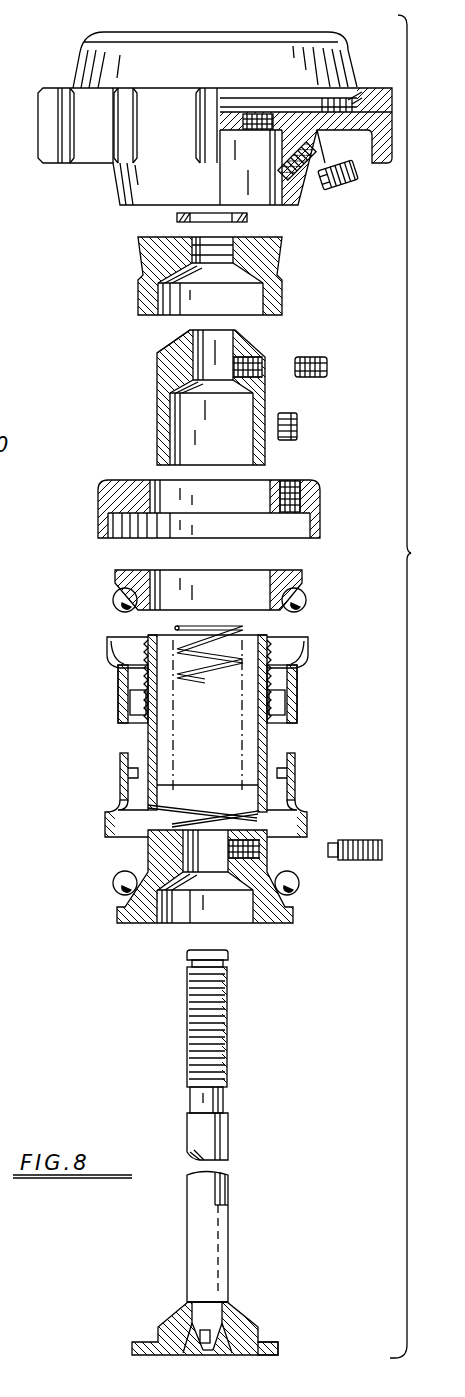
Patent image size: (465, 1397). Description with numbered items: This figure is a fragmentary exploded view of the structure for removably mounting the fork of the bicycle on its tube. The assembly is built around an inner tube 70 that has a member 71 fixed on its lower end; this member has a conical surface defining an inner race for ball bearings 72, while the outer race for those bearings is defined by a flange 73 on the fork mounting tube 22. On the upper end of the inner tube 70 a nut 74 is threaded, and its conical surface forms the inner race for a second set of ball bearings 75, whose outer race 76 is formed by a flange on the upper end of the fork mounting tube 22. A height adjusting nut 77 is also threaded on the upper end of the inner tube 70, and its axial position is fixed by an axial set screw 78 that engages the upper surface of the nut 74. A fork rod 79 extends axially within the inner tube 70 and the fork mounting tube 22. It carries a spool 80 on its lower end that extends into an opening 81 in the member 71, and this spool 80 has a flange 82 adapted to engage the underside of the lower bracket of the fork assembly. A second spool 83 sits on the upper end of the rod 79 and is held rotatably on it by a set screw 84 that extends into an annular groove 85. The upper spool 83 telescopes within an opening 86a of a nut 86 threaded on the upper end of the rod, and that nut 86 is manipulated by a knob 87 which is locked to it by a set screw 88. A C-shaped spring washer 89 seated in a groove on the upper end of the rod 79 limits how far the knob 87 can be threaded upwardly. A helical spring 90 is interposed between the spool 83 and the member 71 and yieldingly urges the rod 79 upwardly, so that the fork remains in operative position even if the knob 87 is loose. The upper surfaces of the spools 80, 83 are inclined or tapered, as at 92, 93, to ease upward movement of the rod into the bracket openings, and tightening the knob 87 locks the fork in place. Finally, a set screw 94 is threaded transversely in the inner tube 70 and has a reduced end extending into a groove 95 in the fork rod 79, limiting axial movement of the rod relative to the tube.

The fork mounting tube 22 is at (297, 698).
The inner tube 70 is at (267, 735).
The member 71 is at (218, 894).
The ball bearings 72 is at (113, 883).
The flange 73 is at (305, 812).
The nut 74 is at (305, 575).
The ball bearings 75 is at (307, 603).
The outer race 76 is at (310, 653).
The height adjusting nut 77 is at (310, 500).
The axial set screw 78 is at (298, 428).
The fork rod 79 is at (223, 1185).
The spool 80 is at (200, 1330).
The opening 81 is at (253, 910).
The flange 82 is at (278, 1348).
The second spool 83 is at (176, 395).
The set screw 84 is at (316, 363).
The annular groove 85 is at (220, 1107).
The nut 86 is at (249, 276).
The opening 86a is at (262, 302).
The knob 87 is at (85, 153).
The set screw 88 is at (356, 179).
The C-shaped spring washer 89 is at (247, 218).
The helical spring 90 is at (205, 683).
The tapered surface 92 is at (240, 1317).
The tapered surface 93 is at (173, 348).
The set screw 94 is at (365, 840).
The groove 95 is at (228, 1273).